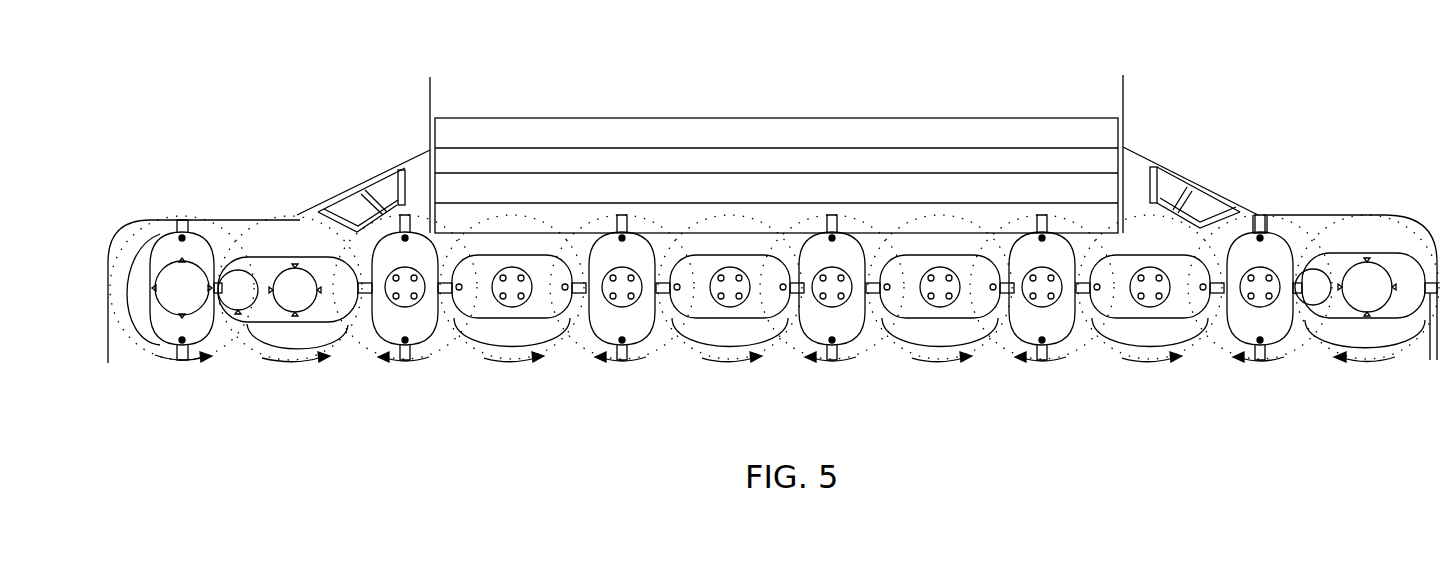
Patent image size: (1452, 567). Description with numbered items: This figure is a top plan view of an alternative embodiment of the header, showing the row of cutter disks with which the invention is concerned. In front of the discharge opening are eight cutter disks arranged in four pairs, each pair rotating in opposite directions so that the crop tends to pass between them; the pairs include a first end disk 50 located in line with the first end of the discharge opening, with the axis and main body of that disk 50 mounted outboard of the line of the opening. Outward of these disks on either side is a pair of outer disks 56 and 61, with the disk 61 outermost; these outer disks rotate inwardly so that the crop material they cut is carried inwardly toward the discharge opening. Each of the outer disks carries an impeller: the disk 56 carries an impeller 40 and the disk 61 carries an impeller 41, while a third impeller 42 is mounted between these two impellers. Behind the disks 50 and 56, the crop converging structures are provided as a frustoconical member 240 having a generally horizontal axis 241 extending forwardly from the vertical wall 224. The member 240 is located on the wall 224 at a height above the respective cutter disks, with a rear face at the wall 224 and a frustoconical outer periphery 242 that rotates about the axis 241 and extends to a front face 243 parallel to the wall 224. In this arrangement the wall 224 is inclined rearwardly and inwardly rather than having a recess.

The vertical wall 224 is at (397, 190).
The frustoconical member 240 is at (386, 170).
The horizontal axis 241 is at (362, 186).
The frustoconical outer periphery 242 is at (297, 212).
The front face 243 is at (375, 328).
The impeller 40 is at (180, 315).
The impeller 41 is at (294, 313).
The third impeller 42 is at (238, 310).
The first end disk 50 is at (425, 325).
The outer disk 56 is at (283, 314).
The outer disk 61 is at (157, 342).